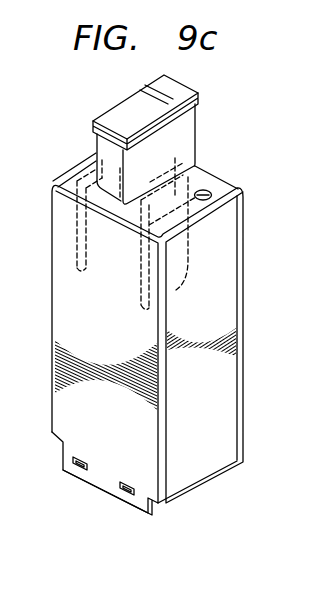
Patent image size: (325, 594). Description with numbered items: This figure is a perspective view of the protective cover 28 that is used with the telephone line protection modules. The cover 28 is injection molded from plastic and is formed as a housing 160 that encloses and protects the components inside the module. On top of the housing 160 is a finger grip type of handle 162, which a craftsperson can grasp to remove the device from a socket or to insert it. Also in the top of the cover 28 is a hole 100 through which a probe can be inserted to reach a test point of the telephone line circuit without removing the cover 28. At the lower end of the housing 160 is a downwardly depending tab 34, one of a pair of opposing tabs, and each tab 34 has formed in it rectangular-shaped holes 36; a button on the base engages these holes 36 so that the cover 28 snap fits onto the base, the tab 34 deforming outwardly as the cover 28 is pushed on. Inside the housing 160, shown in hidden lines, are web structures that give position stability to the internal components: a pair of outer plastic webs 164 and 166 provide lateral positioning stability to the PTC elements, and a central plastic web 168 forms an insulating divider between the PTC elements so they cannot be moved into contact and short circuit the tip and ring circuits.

The protective cover 28 is at (68, 154).
The housing 160 is at (228, 268).
The finger grip handle 162 is at (125, 107).
The hole 100 is at (206, 191).
The central plastic web 168 is at (173, 170).
The outer plastic web 166 is at (92, 258).
The outer plastic web 164 is at (166, 306).
The rectangular-shaped hole 36 is at (77, 474).
The downwardly depending tab 34 is at (126, 506).